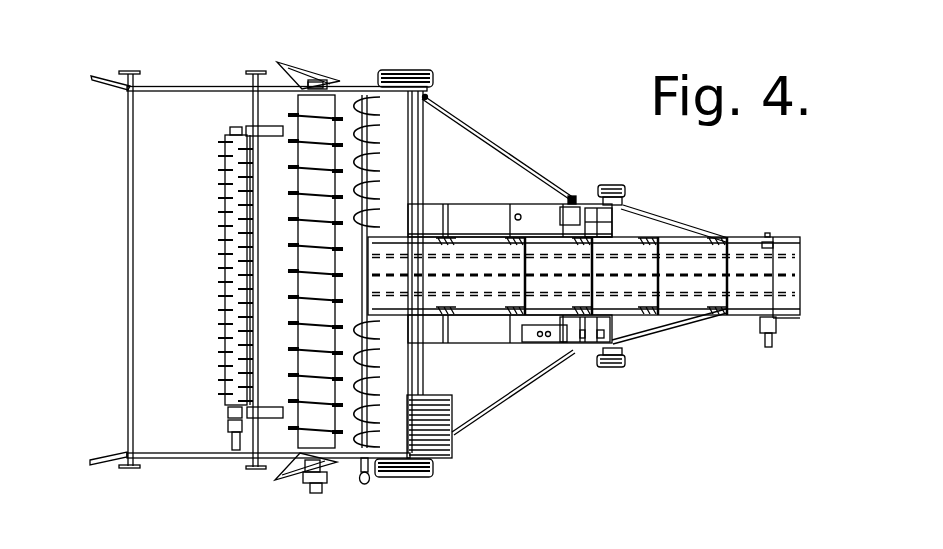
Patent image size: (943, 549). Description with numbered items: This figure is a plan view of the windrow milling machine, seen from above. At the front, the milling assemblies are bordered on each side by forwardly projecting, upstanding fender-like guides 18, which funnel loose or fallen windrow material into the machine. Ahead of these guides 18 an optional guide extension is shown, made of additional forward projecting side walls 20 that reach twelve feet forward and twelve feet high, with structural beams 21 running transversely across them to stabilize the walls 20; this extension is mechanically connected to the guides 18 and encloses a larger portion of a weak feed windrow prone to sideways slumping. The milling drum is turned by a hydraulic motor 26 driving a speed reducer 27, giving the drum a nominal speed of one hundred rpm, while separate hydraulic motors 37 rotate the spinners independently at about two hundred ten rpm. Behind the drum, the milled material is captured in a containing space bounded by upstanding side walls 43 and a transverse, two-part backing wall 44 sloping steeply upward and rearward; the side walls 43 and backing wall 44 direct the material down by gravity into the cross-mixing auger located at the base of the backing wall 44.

The guide 18 is at (300, 68).
The side wall 20 is at (193, 86).
The structural beam 21 is at (253, 107).
The hydraulic motor 26 is at (320, 493).
The speed reducer 27 is at (330, 483).
The hydraulic motor 37 is at (235, 450).
The side wall 43 is at (388, 93).
The backing wall 44 is at (397, 178).